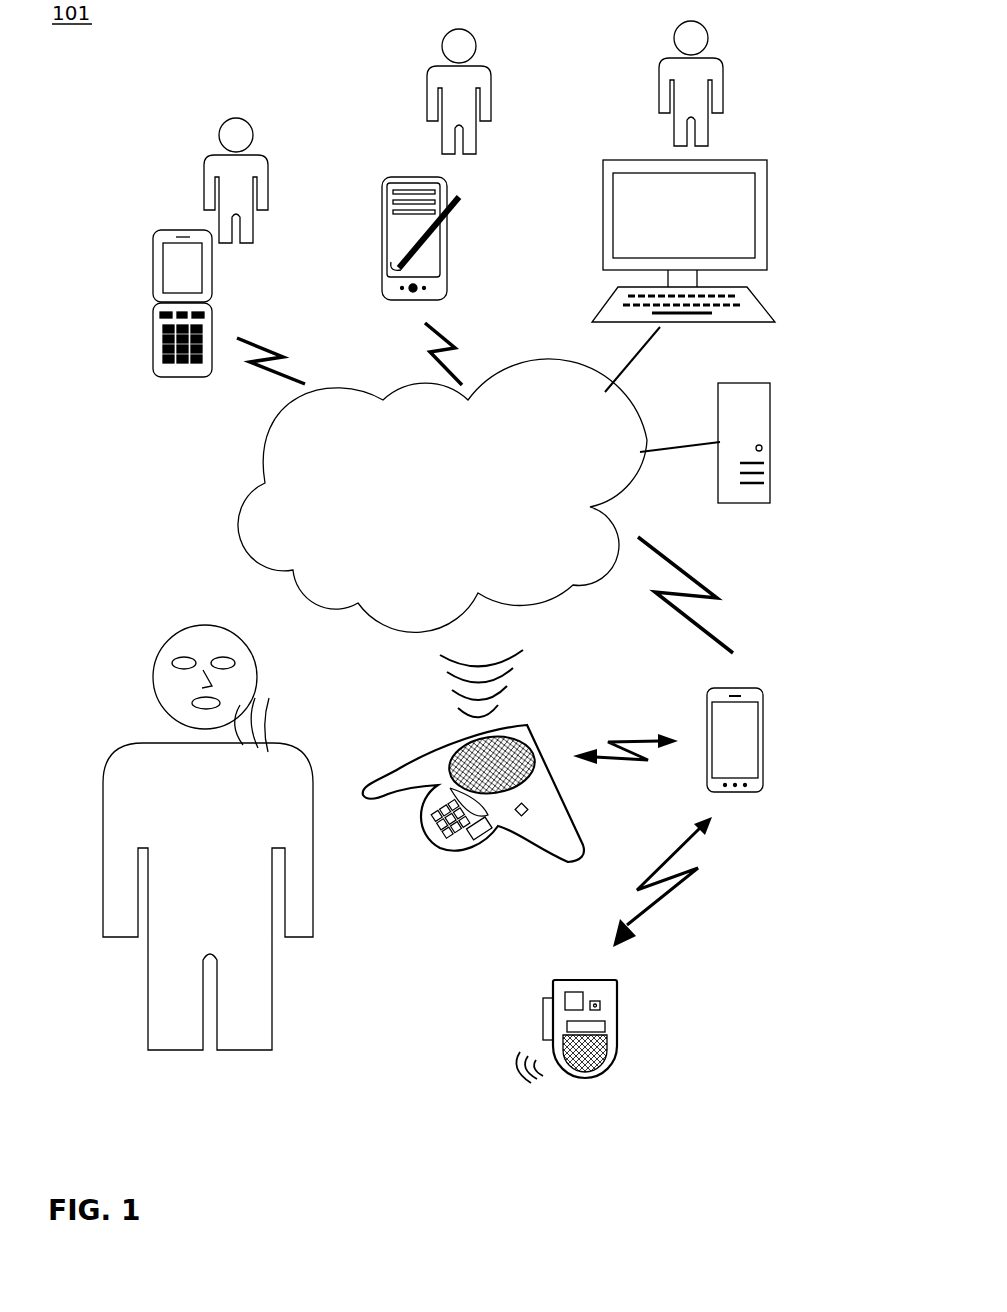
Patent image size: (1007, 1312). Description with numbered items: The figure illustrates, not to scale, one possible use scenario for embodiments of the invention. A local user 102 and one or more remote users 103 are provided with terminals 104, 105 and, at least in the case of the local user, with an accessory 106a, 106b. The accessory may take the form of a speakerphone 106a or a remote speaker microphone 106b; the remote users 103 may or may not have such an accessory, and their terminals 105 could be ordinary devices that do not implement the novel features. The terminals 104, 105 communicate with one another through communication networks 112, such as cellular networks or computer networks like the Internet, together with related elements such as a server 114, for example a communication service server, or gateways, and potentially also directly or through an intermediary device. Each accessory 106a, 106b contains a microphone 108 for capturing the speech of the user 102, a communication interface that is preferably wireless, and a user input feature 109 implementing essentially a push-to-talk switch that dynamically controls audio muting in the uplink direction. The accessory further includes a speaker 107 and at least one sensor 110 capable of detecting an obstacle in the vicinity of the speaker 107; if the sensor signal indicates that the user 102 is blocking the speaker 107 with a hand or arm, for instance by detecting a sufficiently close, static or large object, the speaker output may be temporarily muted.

The local user 102 is at (195, 837).
The remote users 103 is at (441, 129).
The terminal 104 is at (770, 719).
The terminals 105 is at (426, 268).
The speakerphone accessory 106a is at (473, 756).
The remote speaker microphone accessory 106b is at (532, 1005).
The speaker 107 is at (542, 936).
The microphone 108 is at (593, 906).
The user input feature 109 is at (515, 953).
The sensor 110 is at (532, 942).
The communication network 112 is at (401, 496).
The server 114 is at (781, 443).